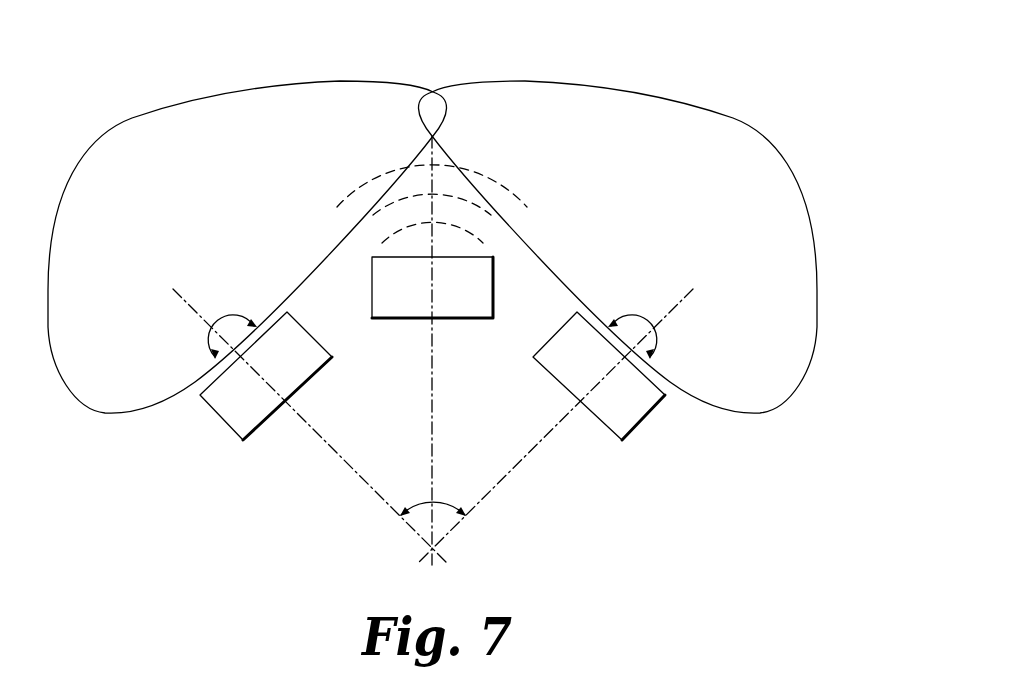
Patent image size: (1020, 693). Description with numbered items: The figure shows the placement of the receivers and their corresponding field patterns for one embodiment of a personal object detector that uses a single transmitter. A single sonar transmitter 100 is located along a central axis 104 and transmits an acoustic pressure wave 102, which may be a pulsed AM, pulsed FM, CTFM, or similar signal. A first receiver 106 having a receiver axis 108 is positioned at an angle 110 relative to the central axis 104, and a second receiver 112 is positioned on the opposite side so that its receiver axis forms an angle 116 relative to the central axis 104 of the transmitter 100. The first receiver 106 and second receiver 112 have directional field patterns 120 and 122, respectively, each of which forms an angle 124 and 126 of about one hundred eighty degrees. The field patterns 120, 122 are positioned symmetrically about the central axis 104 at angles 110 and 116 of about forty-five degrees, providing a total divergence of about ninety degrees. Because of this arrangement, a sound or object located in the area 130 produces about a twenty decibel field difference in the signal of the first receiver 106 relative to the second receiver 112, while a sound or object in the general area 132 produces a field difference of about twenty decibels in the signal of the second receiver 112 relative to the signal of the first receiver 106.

The sonar transmitter 100 is at (468, 318).
The acoustic pressure wave 102 is at (503, 164).
The central axis 104 is at (432, 412).
The first receiver 106 is at (220, 418).
The receiver axis 108 is at (333, 450).
The angle 110 is at (434, 475).
The second receiver 112 is at (645, 420).
The angle 116 is at (444, 503).
The field pattern 120 is at (247, 283).
The field pattern 122 is at (655, 247).
The angle 124 is at (233, 323).
The angle 126 is at (632, 323).
The area 130 is at (99, 422).
The area 132 is at (838, 278).